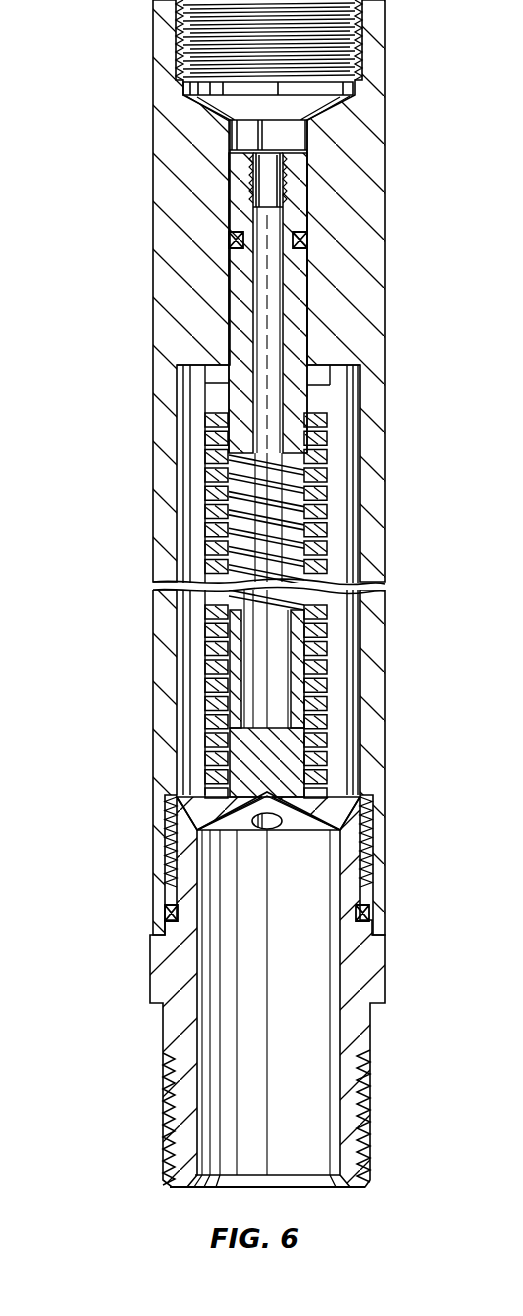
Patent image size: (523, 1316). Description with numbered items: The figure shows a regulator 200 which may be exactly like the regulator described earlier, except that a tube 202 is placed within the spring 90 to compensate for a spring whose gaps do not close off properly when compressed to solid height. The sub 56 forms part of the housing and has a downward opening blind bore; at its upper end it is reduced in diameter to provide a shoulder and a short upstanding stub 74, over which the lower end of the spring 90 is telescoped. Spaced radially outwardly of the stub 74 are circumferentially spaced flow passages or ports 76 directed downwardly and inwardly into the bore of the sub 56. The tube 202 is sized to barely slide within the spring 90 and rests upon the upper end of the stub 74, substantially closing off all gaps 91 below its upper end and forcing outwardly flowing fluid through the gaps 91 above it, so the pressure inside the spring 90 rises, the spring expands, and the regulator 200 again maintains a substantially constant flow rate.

The regulator 200 is at (114, 309).
The sub 56 is at (370, 970).
The stub 74 is at (210, 742).
The flow passages or ports 76 is at (349, 799).
The spring 90 is at (336, 605).
The gaps 91 is at (327, 618).
The tube 202 is at (307, 667).